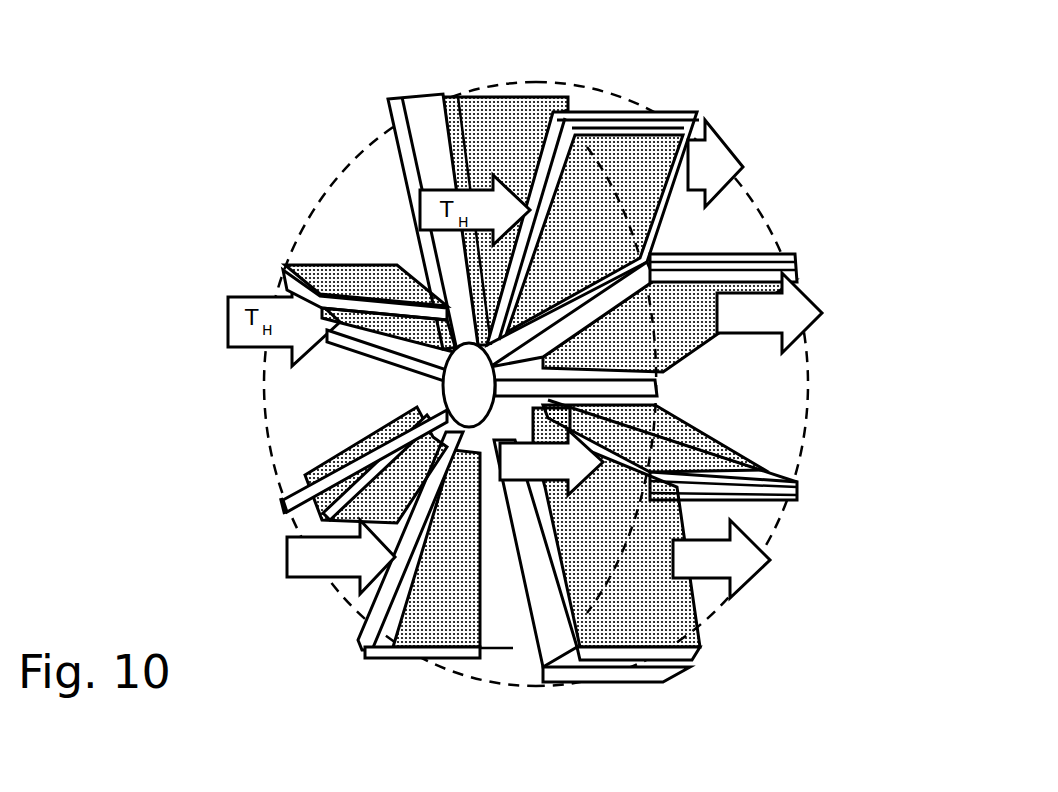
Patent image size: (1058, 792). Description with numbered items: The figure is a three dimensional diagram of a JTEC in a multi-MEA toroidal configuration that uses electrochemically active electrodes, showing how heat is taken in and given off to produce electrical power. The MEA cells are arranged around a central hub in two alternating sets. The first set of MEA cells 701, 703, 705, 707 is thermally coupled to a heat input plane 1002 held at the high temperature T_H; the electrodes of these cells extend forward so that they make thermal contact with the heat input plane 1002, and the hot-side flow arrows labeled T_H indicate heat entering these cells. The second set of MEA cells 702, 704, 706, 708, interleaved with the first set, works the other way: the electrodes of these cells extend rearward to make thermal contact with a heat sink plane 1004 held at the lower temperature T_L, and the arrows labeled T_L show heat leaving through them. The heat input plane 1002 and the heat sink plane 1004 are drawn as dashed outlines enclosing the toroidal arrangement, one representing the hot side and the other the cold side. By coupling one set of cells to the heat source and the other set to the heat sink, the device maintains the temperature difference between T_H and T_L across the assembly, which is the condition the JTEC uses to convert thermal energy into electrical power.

The MEA cell 701 is at (636, 100).
The MEA cell 702 is at (797, 258).
The MEA cell 703 is at (803, 497).
The MEA cell 704 is at (652, 688).
The MEA cell 705 is at (363, 660).
The MEA cell 706 is at (266, 512).
The MEA cell 707 is at (270, 282).
The MEA cell 708 is at (430, 88).
The heat input plane 1002 is at (315, 178).
The heat sink plane 1004 is at (770, 197).